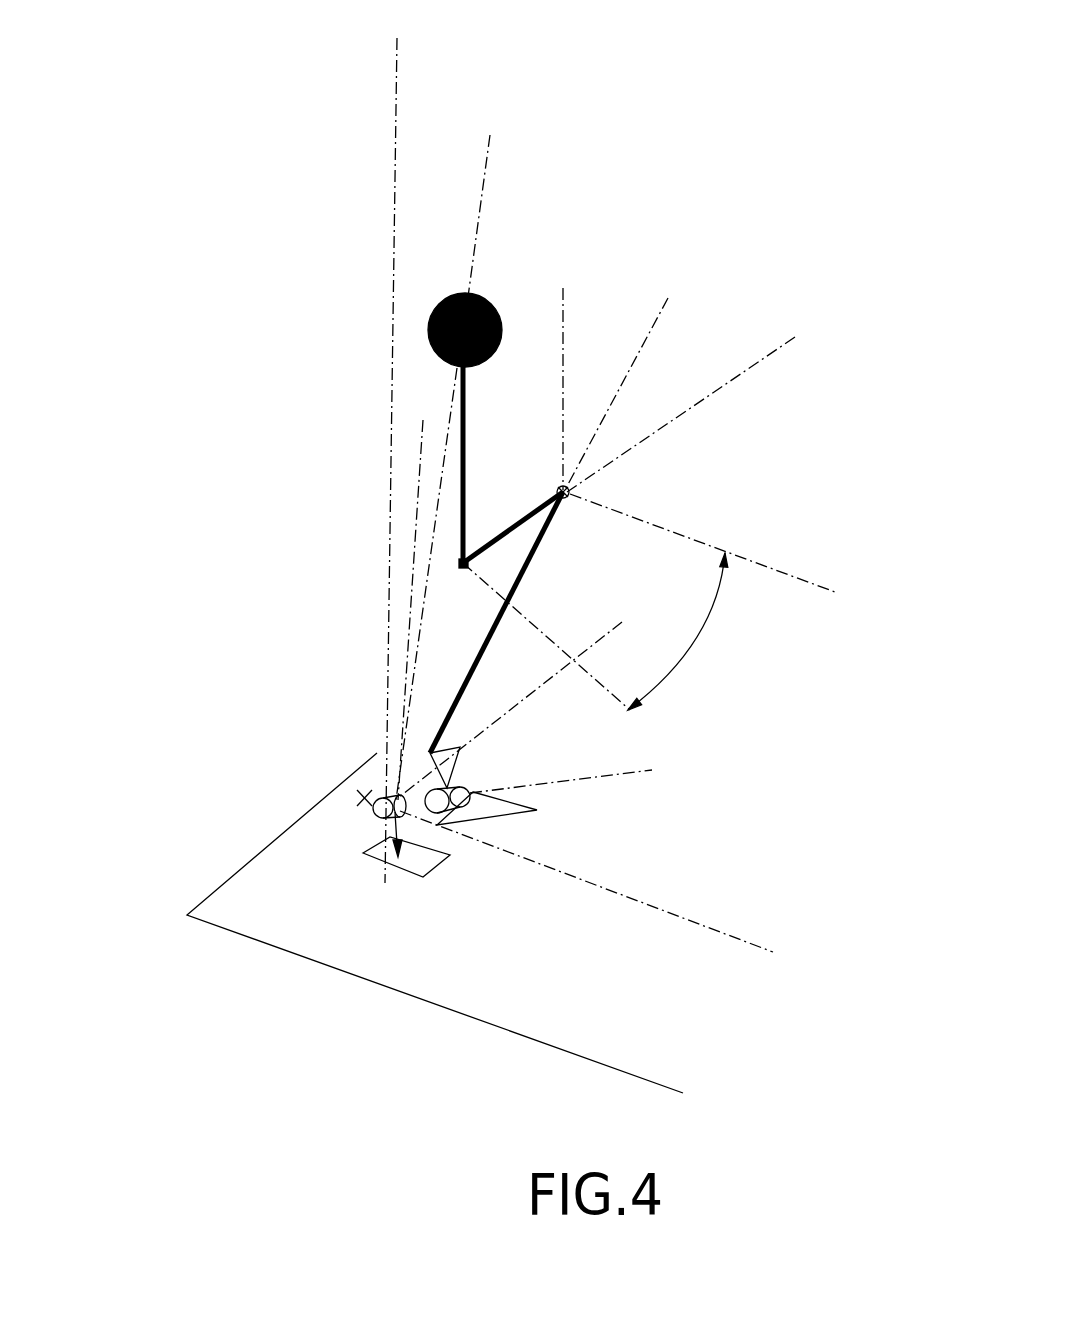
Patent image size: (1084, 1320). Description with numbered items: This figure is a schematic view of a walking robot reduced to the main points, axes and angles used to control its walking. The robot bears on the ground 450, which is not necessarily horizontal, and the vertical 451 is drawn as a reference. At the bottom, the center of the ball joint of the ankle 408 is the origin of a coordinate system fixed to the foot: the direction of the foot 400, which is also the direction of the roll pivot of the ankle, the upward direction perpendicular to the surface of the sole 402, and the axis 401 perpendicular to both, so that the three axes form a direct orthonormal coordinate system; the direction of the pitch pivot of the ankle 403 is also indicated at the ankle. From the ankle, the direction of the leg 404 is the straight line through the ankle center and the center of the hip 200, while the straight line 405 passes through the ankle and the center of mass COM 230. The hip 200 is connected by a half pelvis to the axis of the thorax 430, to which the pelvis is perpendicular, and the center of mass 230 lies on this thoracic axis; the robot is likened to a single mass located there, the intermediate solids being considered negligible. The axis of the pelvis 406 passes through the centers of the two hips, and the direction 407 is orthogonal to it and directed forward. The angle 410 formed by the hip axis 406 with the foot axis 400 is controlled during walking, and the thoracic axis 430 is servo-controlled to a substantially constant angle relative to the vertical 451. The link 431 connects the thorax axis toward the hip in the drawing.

The hip 200 is at (575, 492).
The center of mass COM 230 is at (437, 300).
The direction of the foot 400 is at (651, 723).
The axis perpendicular to the foot direction and the sole normal 401 is at (533, 692).
The direction perpendicular to the sole 402 is at (413, 470).
The direction of the pitch pivot of the ankle 403 is at (571, 780).
The direction of the leg 404 is at (639, 376).
The straight line through the ankle and the COM 405 is at (487, 196).
The axis of the pelvis 406 is at (709, 400).
The forward direction orthogonal to the pelvis axis 407 is at (546, 655).
The center of the ball joint of the ankle 408 is at (390, 797).
The angle between the hip axis and the foot axis 410 is at (700, 635).
The axis of the thorax 430 is at (460, 423).
The link 431 is at (503, 532).
The ground 450 is at (262, 912).
The vertical 451 is at (486, 442).